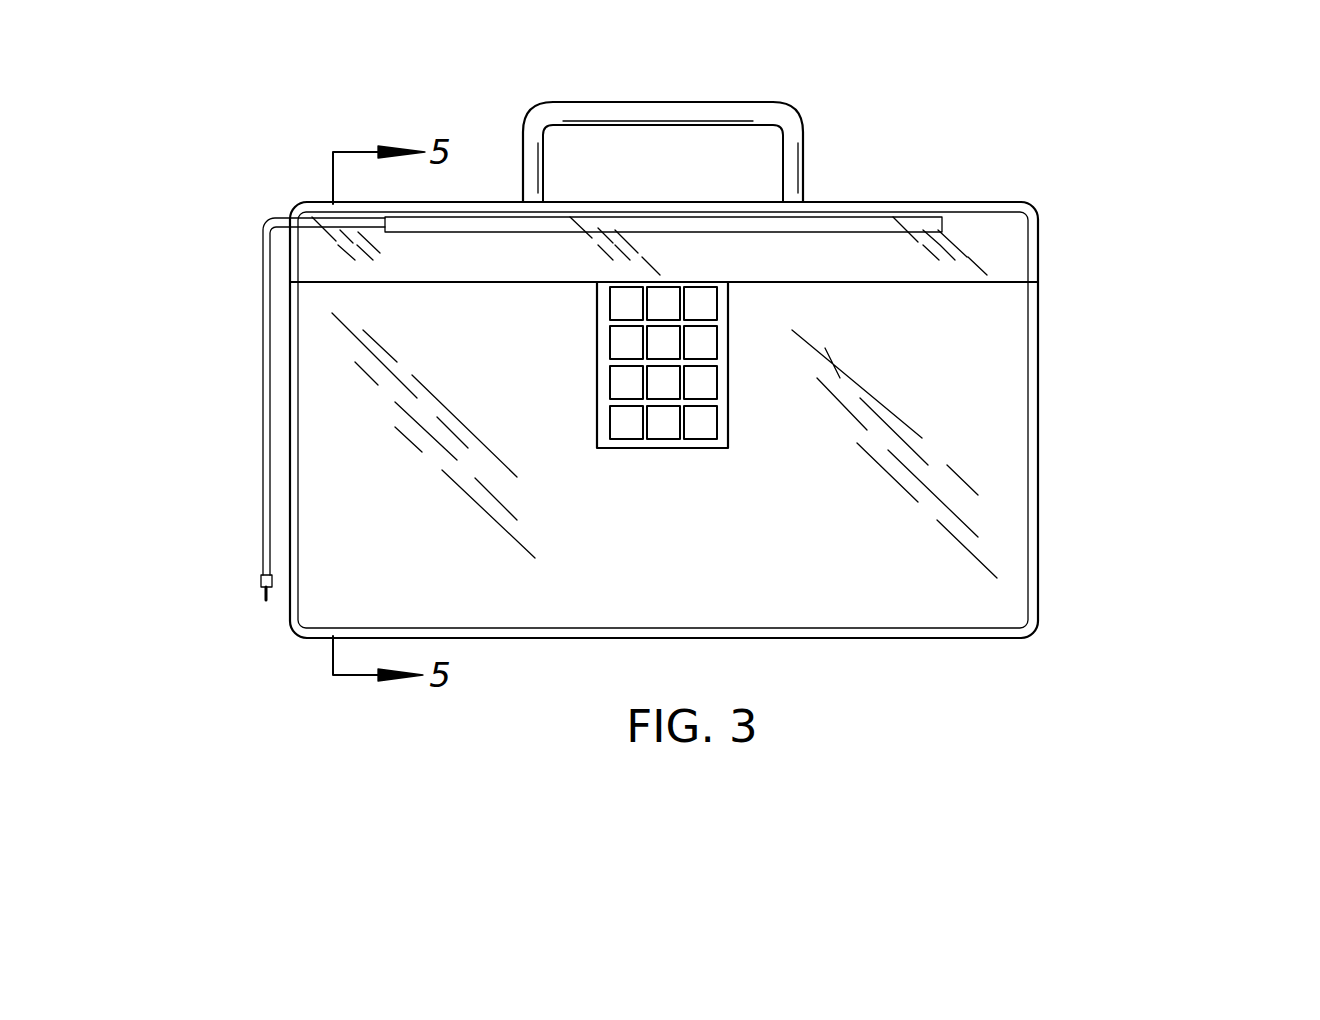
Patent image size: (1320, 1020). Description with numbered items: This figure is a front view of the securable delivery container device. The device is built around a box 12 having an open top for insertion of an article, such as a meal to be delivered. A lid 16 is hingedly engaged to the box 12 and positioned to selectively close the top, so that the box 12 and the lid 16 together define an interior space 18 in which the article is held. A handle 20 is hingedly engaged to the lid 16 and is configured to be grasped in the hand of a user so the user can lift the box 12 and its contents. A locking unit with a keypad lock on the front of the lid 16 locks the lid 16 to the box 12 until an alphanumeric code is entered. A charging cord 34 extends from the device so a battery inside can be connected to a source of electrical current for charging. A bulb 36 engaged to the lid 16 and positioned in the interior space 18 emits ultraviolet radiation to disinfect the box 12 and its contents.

The box 12 is at (1038, 416).
The lid 16 is at (993, 240).
The interior space 18 is at (937, 520).
The handle 20 is at (713, 108).
The charging cord 34 is at (267, 422).
The bulb 36 is at (863, 223).